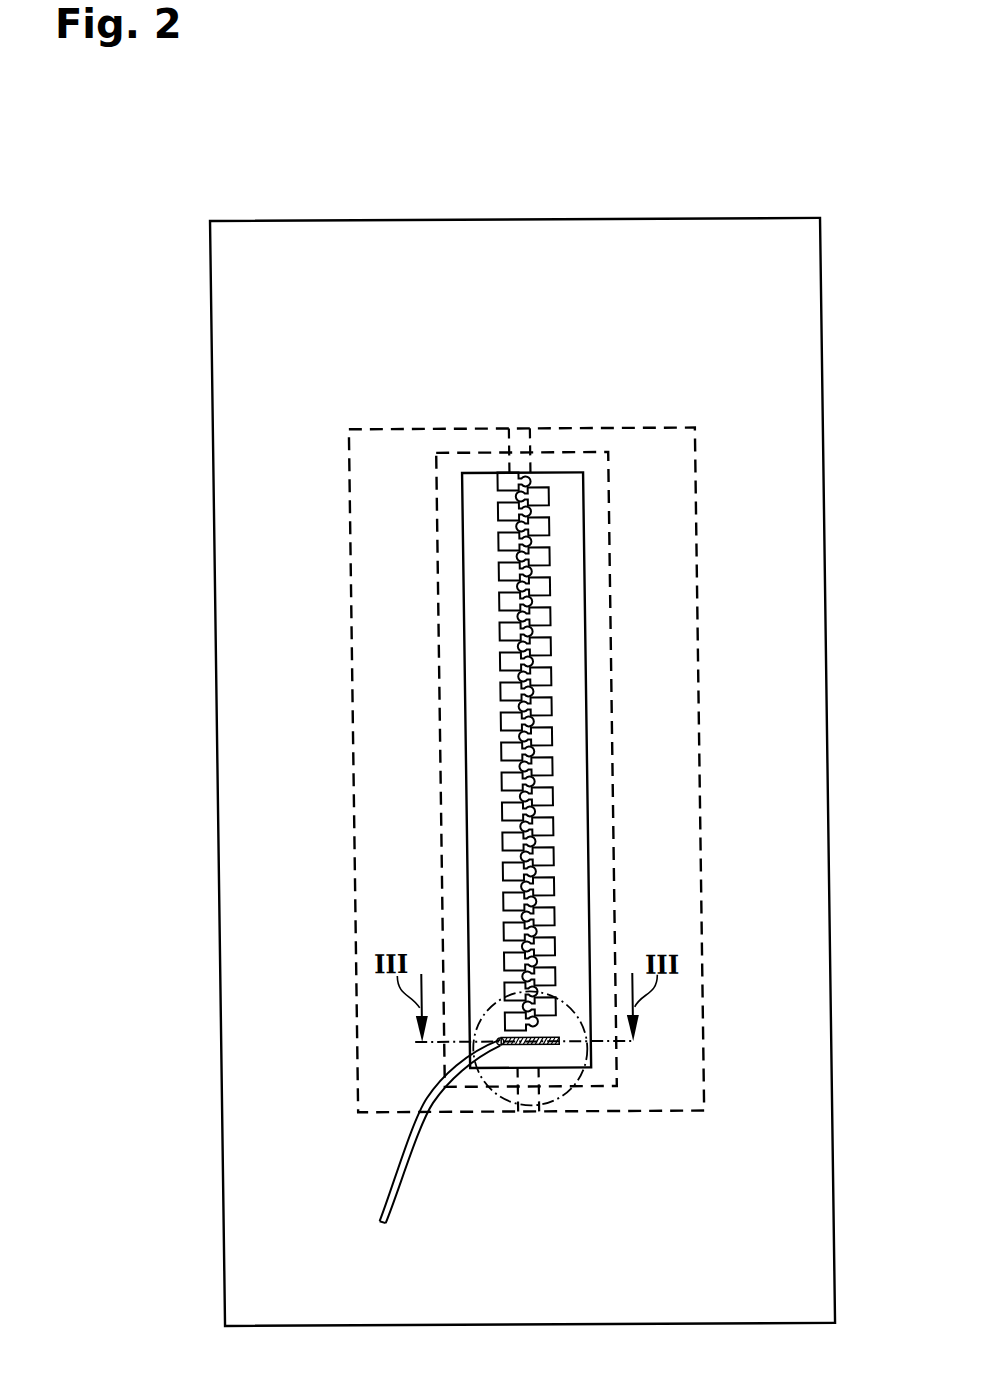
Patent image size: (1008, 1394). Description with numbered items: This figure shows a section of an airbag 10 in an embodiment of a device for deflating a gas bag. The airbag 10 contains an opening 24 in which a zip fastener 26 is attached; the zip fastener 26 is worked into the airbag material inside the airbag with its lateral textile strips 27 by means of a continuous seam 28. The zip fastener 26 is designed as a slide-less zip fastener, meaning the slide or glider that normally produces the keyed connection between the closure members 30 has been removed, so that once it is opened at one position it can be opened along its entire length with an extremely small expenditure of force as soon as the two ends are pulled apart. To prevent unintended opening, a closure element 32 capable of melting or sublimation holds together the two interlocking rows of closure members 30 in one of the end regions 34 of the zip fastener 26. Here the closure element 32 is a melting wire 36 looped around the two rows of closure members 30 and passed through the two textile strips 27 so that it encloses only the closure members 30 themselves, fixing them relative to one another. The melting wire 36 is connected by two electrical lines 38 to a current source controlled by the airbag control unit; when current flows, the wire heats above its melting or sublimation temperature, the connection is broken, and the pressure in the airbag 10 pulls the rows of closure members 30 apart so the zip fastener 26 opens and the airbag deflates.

The airbag 10 is at (786, 327).
The opening 24 is at (456, 822).
The zip fastener 26 is at (556, 500).
The lateral textile strips 27 is at (360, 524).
The continuous seam 28 is at (431, 685).
The closure members 30 is at (543, 650).
The closure element 32 is at (557, 1057).
The end region 34 is at (545, 1110).
The melting wire 36 is at (483, 1050).
The electrical lines 38 is at (366, 1215).